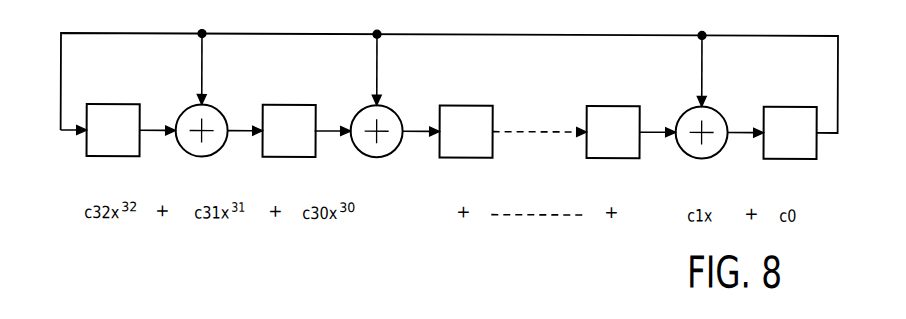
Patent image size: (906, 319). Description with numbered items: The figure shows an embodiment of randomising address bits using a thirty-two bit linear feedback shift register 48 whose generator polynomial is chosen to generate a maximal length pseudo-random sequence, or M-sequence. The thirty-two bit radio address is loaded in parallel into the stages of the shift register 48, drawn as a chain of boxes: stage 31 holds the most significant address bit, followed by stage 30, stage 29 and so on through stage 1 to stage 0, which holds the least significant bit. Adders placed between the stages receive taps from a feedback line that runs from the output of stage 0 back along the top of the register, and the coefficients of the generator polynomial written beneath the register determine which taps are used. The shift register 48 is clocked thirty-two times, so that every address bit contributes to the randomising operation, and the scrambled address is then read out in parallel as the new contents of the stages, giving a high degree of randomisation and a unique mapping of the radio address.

The linear feedback shift register 48 is at (497, 29).
The shift register stage a31 31 is at (113, 130).
The shift register stage a30 30 is at (289, 131).
The shift register stage a29 29 is at (466, 131).
The shift register stage a1 1 is at (613, 132).
The shift register stage a0 0 is at (790, 133).